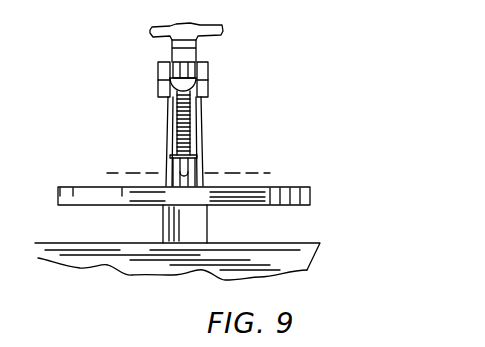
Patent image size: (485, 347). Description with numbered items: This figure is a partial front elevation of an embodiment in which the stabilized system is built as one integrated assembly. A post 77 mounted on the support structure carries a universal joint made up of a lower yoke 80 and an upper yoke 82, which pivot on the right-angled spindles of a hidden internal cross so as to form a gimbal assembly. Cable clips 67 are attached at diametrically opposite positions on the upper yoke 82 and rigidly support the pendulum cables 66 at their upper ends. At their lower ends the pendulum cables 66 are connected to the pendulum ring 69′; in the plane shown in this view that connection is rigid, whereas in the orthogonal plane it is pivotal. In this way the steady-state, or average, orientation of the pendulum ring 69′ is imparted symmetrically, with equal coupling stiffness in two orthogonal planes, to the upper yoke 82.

The upper yoke 82 is at (170, 44).
The lower yoke 80 is at (163, 93).
The cable clips 67 is at (198, 77).
The pendulum cables 66 is at (191, 118).
The pendulum ring 69′ is at (258, 194).
The post 77 is at (198, 222).